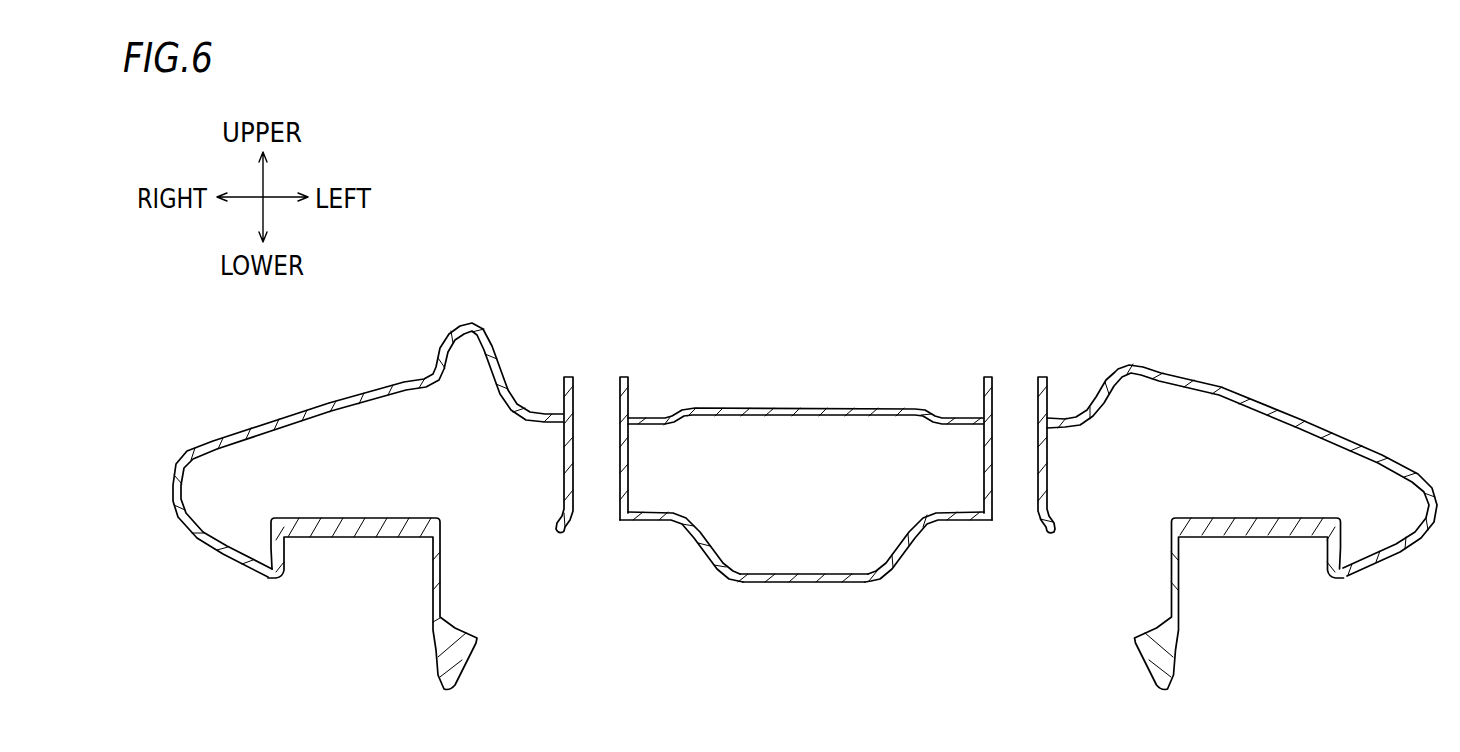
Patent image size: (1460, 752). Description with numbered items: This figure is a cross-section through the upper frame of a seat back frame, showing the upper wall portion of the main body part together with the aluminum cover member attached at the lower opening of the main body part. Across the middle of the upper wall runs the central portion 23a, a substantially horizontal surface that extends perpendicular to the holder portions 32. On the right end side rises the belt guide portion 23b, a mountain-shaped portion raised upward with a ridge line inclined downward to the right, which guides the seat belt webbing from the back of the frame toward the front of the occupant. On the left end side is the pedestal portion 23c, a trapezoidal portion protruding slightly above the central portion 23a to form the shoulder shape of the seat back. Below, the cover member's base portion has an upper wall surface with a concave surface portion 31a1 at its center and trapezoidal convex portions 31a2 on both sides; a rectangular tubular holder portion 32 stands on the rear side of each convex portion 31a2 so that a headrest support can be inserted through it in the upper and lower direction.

The central portion 23a is at (790, 408).
The belt guide portion 23b is at (306, 406).
The pedestal portion 23c is at (1270, 400).
The holder portion 32 is at (983, 403).
The concave surface portion 31a1 is at (800, 582).
The convex portion 31a2 is at (948, 616).